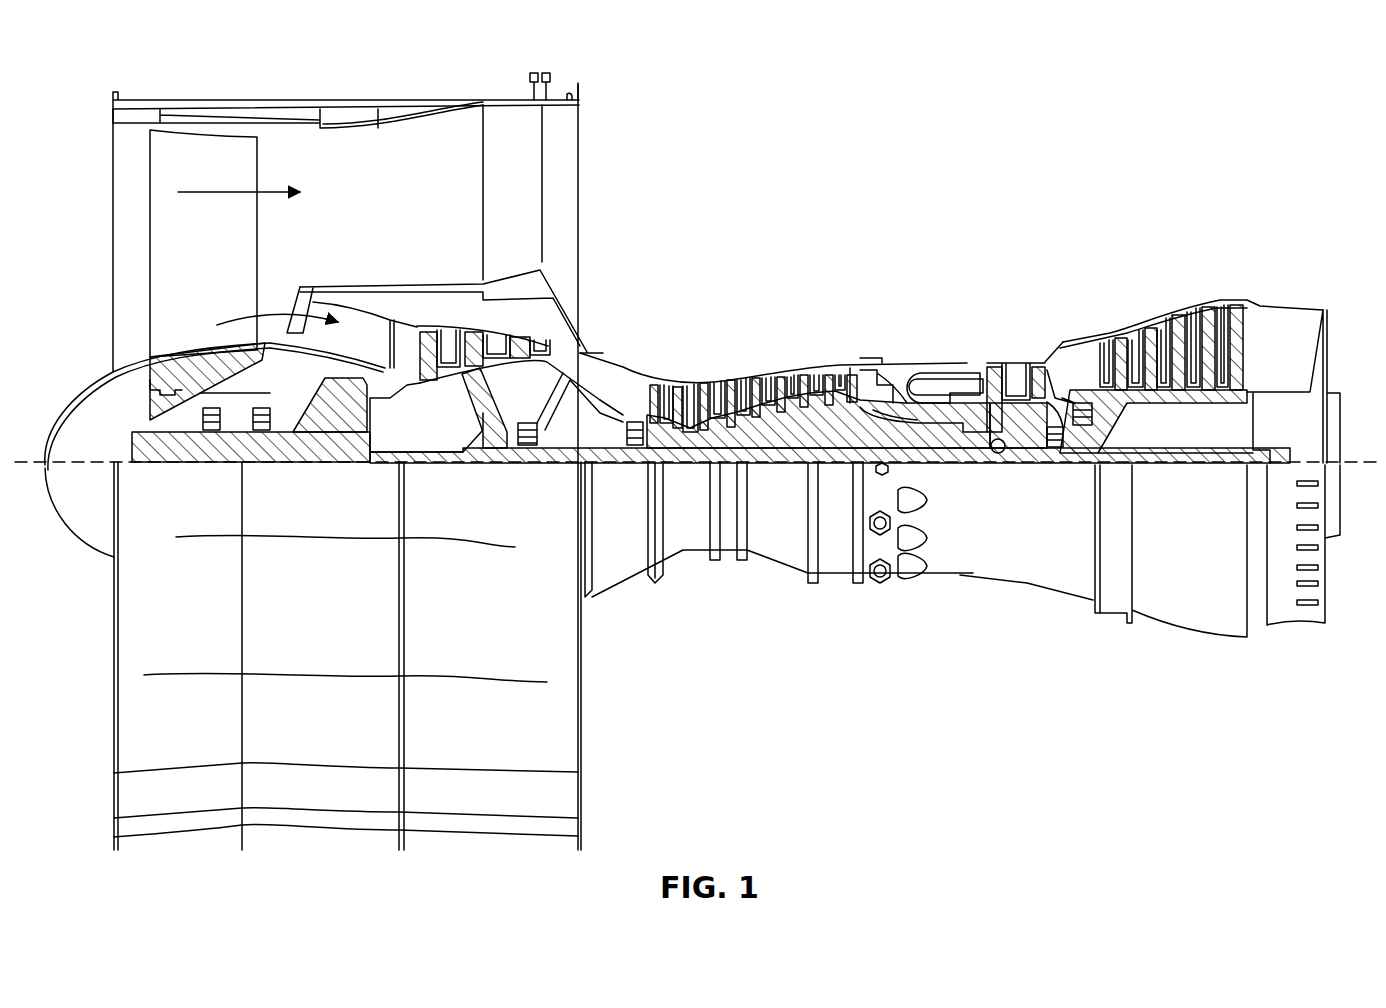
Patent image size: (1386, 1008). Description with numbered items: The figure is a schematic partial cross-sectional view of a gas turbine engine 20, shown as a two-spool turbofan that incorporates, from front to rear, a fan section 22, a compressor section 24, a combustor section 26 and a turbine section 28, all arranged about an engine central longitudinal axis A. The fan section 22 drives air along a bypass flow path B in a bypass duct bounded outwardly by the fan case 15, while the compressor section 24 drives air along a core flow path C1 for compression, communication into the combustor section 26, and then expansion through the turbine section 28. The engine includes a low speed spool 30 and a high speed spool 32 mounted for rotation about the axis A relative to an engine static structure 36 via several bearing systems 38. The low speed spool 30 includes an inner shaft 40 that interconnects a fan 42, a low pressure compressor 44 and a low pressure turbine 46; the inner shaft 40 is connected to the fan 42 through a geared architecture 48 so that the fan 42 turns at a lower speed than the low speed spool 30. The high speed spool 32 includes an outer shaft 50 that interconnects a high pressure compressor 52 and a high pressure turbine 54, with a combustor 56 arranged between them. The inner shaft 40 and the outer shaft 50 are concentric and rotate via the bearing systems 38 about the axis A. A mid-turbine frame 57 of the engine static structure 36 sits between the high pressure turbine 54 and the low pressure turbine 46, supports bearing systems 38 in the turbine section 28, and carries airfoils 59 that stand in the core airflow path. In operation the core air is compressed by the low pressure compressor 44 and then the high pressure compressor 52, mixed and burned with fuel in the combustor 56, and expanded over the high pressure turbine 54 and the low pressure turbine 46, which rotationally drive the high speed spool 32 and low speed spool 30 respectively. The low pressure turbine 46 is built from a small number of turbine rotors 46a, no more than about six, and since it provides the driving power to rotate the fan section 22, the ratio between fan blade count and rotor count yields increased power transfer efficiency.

The gas turbine engine 20 is at (1192, 146).
The fan section 22 is at (303, 84).
The fan case / nacelle 15 is at (353, 103).
The fan 42 is at (216, 238).
The bypass flow path B is at (232, 188).
The core flow path C1 is at (253, 323).
The geared architecture 48 is at (347, 457).
The compressor section 24 is at (638, 347).
The low pressure compressor 44 is at (473, 340).
The bearing systems 38 is at (536, 460).
The inner shaft 40 is at (610, 457).
The high pressure compressor 52 is at (765, 378).
The high speed spool 32 is at (822, 430).
The combustor section 26 is at (906, 315).
The combustor 56 is at (943, 388).
The high pressure turbine 54 is at (1017, 362).
The outer shaft 50 is at (1000, 455).
The mid-turbine frame 57 is at (1066, 351).
The turbine section 28 is at (1102, 295).
The low pressure turbine 46 is at (1180, 325).
The turbine rotors 46a is at (1207, 313).
The airfoils 59 is at (1105, 398).
The low speed spool 30 is at (786, 472).
The engine static structure 36 is at (835, 582).
The engine central longitudinal axis A is at (1353, 463).